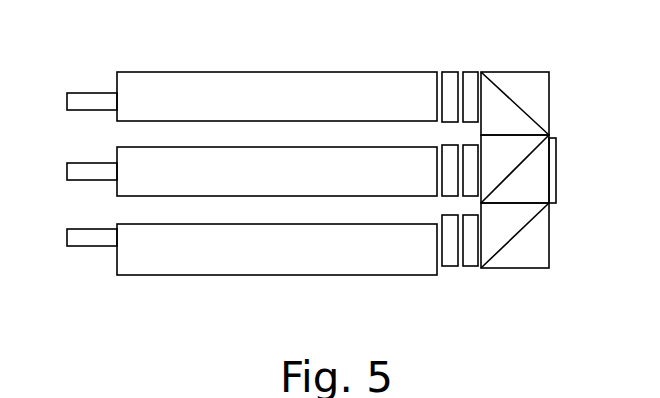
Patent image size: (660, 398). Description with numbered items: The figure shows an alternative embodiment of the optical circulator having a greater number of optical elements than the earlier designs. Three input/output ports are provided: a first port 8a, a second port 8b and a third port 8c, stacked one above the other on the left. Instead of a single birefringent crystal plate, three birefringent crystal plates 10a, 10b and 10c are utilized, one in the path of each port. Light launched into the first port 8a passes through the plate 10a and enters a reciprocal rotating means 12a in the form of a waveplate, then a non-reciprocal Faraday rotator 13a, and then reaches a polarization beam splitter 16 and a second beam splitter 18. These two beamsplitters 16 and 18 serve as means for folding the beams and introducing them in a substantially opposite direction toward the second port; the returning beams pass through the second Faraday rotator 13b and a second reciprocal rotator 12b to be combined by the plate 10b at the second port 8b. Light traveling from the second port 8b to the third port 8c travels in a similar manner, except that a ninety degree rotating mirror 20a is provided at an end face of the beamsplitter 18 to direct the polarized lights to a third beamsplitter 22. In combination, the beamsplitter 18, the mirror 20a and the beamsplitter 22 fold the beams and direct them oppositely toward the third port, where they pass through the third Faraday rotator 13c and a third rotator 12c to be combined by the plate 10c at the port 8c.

The first input/output port 8a is at (82, 93).
The second input/output port 8b is at (80, 163).
The third input/output port 8c is at (82, 229).
The birefringent crystal plate 10a is at (272, 72).
The birefringent crystal plate 10b is at (174, 196).
The birefringent crystal plate 10c is at (185, 275).
The reciprocal rotating means 12a is at (455, 70).
The second rotator 12b is at (441, 197).
The third rotator 12c is at (450, 267).
The non-reciprocal rotator 13a is at (466, 70).
The Faraday rotator 13b is at (471, 145).
The Faraday rotator 13c is at (468, 267).
The polarization beam splitter 16 is at (549, 87).
The second beam splitter 18 is at (550, 204).
The 90 degree rotating mirror 20a is at (556, 158).
The third beamsplitter 22 is at (549, 252).